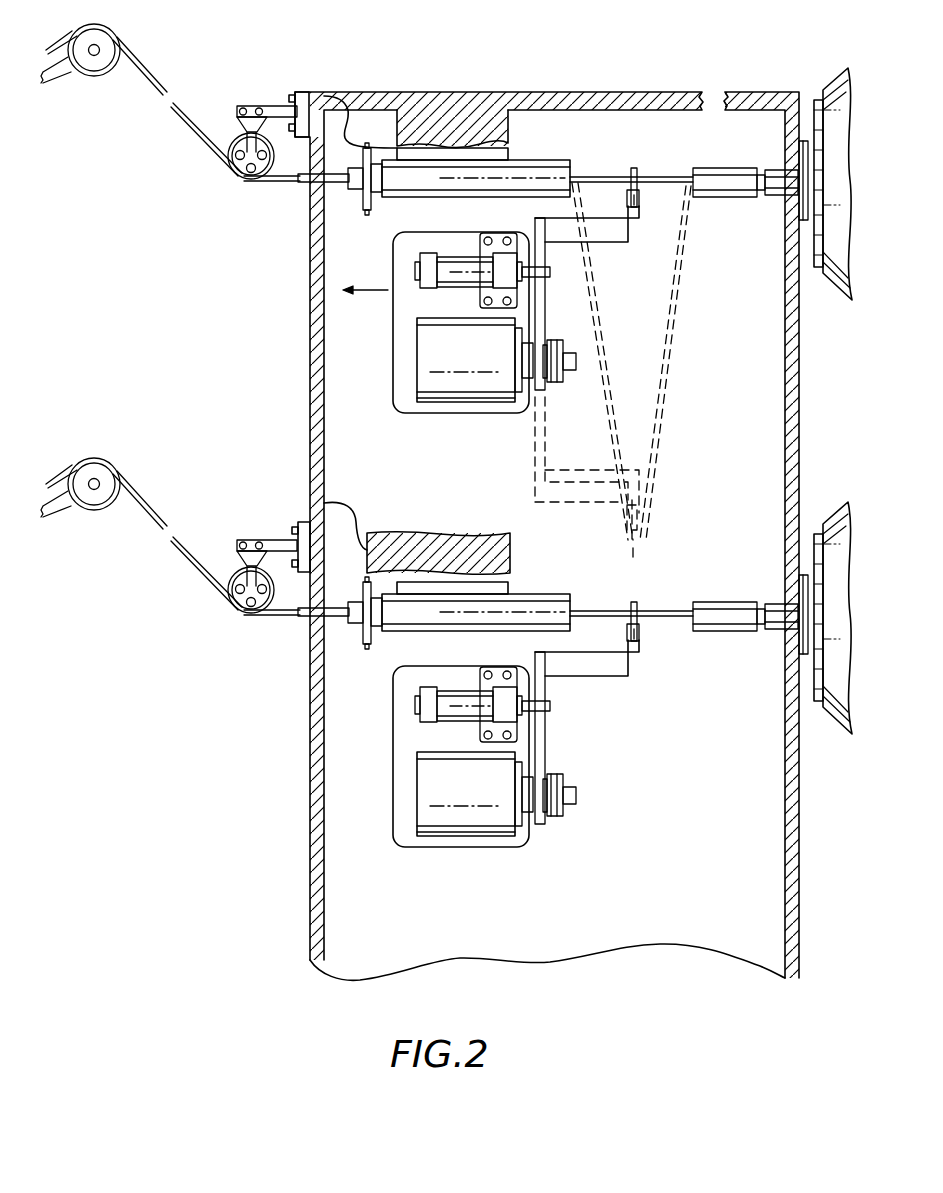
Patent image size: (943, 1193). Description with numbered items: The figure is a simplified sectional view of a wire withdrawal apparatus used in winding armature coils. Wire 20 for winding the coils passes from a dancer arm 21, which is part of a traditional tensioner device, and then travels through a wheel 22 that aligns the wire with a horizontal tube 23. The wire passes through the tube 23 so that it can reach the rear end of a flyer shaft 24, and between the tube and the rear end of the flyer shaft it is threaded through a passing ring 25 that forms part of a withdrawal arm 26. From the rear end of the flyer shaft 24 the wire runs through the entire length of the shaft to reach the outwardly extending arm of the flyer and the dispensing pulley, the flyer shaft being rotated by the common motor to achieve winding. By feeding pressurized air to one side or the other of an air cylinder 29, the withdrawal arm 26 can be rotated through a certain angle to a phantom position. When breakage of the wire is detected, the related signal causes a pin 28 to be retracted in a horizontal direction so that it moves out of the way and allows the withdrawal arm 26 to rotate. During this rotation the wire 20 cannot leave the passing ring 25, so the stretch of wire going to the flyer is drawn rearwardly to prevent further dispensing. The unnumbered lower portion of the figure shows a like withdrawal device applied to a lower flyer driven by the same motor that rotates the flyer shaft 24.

The wire 20 is at (148, 62).
The dancer arm 21 is at (62, 72).
The wheel 22 is at (237, 173).
The horizontal tube 23 is at (520, 170).
The flyer shaft 24 is at (730, 196).
The passing ring 25 is at (635, 170).
The withdrawal arm 26 is at (615, 240).
The pin 28 is at (550, 278).
The air cylinder 29 is at (468, 375).